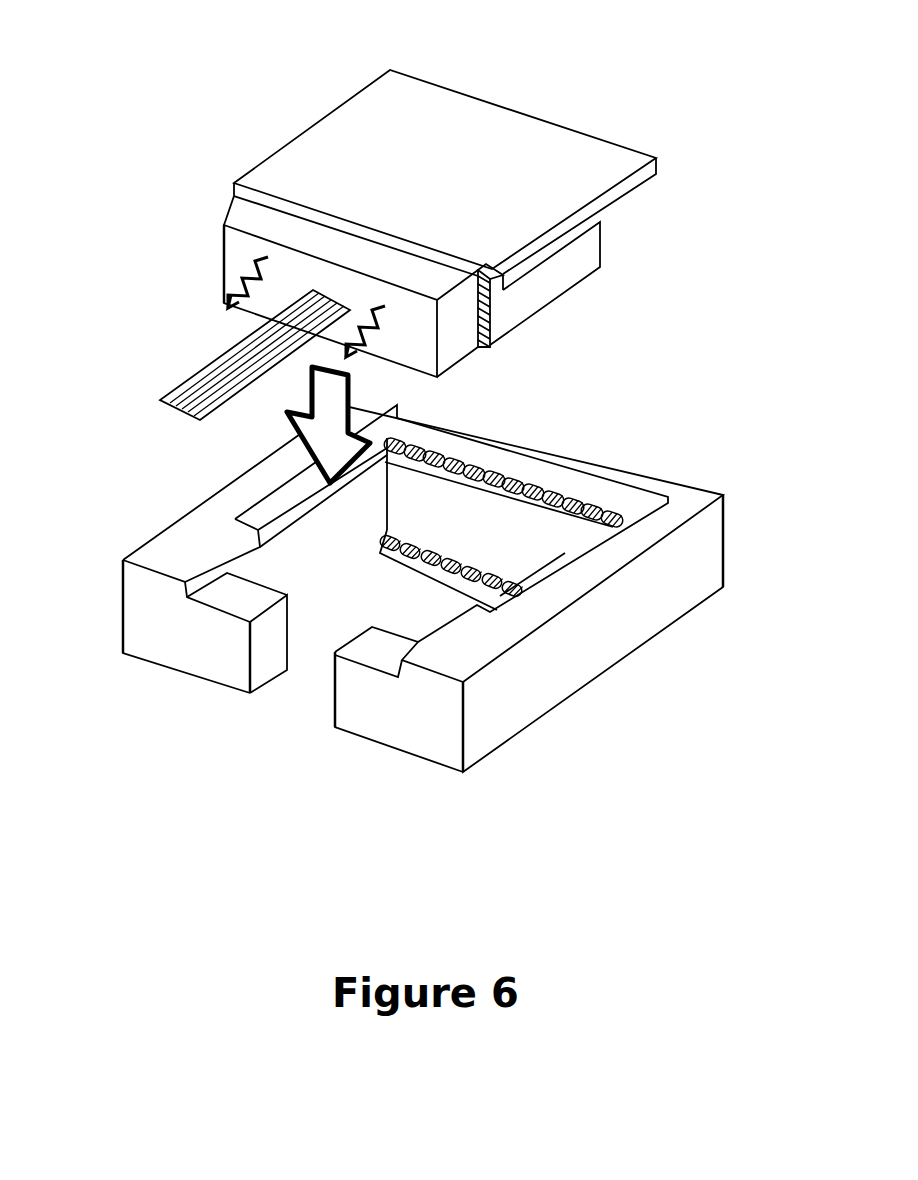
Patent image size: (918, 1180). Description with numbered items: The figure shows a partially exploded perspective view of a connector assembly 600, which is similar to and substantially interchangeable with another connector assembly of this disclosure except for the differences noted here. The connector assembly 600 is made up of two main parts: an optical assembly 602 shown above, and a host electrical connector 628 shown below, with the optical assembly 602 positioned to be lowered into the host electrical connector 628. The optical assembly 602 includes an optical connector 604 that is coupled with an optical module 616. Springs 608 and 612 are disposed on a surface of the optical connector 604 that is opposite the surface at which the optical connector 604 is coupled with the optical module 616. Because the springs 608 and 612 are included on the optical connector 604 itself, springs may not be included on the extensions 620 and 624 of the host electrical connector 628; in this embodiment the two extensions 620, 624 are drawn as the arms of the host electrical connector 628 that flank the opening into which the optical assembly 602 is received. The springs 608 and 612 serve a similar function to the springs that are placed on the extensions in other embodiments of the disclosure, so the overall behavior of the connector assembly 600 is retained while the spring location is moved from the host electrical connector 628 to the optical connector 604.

The connector assembly 600 is at (124, 56).
The optical assembly 602 is at (708, 203).
The optical connector 604 is at (240, 214).
The spring 608 is at (236, 302).
The spring 612 is at (388, 333).
The optical module 616 is at (550, 283).
The extension 620 is at (212, 658).
The extension 624 is at (345, 714).
The host electrical connector 628 is at (590, 658).